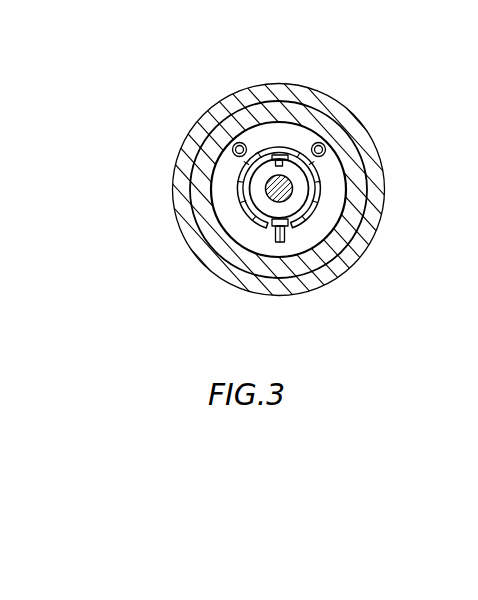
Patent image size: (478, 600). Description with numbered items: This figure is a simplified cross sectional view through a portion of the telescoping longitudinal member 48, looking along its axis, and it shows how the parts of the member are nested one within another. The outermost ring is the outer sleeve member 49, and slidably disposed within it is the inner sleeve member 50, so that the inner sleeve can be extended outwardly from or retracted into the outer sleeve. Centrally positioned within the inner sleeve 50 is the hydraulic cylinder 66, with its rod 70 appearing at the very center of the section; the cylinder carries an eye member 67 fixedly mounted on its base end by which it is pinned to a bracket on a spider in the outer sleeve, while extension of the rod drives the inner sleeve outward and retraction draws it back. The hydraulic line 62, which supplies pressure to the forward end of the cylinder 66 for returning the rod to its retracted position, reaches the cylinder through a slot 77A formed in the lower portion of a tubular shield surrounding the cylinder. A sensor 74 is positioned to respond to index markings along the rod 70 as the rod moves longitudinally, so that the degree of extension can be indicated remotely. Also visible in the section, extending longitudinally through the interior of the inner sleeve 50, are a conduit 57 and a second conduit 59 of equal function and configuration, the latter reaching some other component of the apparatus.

The longitudinal member 48 is at (243, 66).
The outer sleeve member 49 is at (284, 91).
The inner sleeve member 50 is at (316, 101).
The conduit 57 is at (326, 148).
The conduit 59 is at (212, 150).
The hydraulic line 62 is at (277, 246).
The hydraulic cylinder 66 is at (323, 192).
The eye member 67 is at (337, 233).
The rod 70 is at (266, 197).
The sensor 74 is at (270, 166).
The slot 77A is at (287, 239).